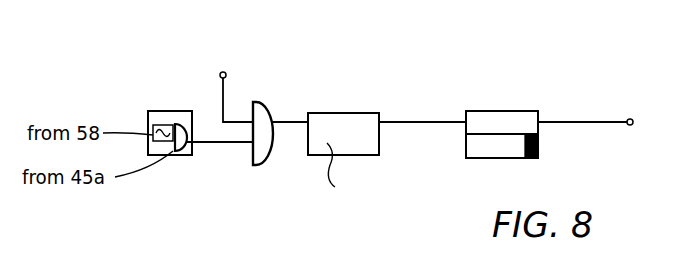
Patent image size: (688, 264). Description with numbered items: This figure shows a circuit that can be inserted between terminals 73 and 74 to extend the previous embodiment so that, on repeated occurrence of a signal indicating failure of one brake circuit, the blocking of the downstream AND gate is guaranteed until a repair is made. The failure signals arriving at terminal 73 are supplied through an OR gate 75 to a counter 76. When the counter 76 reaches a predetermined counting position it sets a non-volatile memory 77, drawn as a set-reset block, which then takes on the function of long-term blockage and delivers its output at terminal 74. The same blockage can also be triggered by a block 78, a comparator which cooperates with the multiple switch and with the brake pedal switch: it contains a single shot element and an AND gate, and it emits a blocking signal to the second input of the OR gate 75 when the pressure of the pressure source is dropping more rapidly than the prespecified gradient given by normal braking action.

The terminal 73 is at (224, 72).
The terminal 74 is at (633, 118).
The OR gate 75 is at (272, 112).
The counter 76 is at (357, 112).
The non-volatile memory 77 is at (500, 108).
The comparator 78 is at (167, 111).